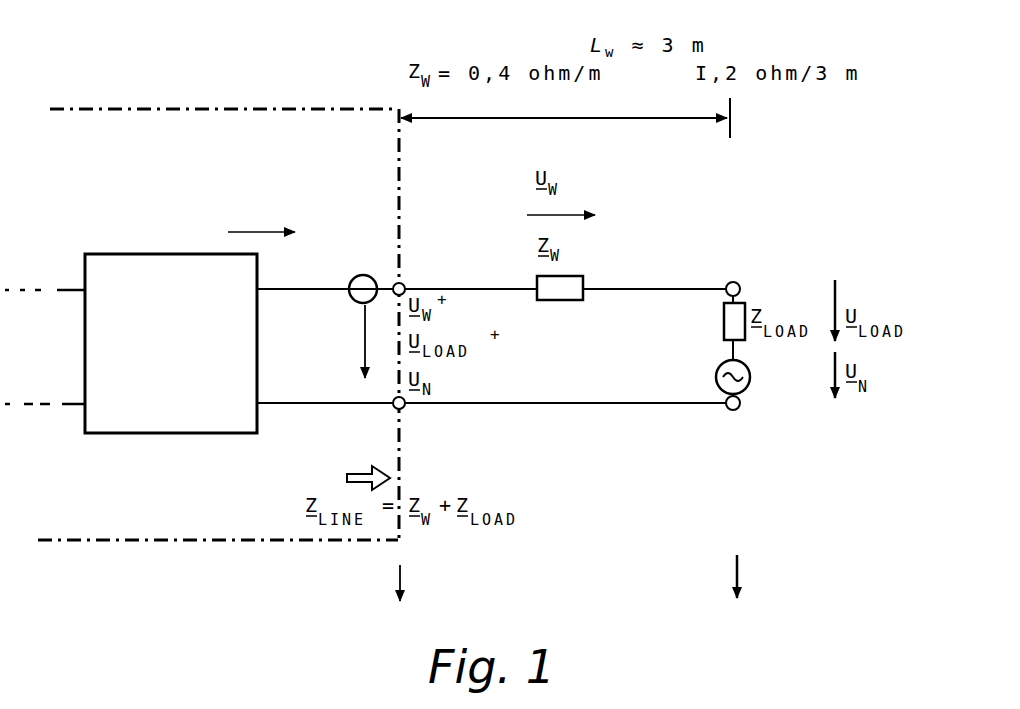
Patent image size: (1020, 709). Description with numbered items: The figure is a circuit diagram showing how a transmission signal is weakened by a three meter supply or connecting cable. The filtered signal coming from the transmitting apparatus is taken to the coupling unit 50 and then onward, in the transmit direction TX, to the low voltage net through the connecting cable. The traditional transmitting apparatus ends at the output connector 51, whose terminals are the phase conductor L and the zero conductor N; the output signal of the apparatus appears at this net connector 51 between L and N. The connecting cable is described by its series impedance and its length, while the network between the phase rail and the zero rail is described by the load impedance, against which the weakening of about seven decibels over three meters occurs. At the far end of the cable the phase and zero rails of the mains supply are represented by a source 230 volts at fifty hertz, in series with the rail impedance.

The coupling unit 50 is at (171, 343).
The output connector 51 is at (360, 314).
The mains voltage source 230V 50Hz 230 is at (773, 392).
The transmit direction TX is at (261, 215).
The line conductor L is at (498, 274).
The neutral conductor N is at (498, 415).